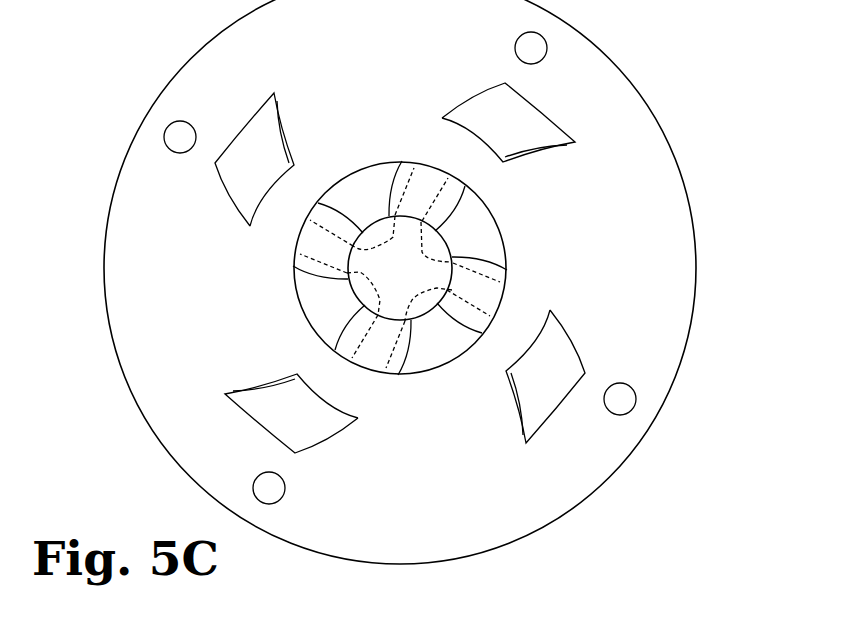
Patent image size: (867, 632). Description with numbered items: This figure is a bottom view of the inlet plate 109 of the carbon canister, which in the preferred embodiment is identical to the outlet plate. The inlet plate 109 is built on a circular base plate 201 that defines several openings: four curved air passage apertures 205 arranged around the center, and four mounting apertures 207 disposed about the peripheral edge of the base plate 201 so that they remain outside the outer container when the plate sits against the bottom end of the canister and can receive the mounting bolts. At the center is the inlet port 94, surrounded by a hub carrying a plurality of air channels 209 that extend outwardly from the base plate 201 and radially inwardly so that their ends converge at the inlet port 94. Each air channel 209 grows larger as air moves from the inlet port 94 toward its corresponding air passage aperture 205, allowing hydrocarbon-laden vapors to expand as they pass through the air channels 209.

The inlet plate 109 is at (128, 117).
The base plate 201 is at (697, 217).
The air passage apertures 205 is at (553, 112).
The mounting apertures 207 is at (638, 397).
The air channels 209 is at (482, 258).
The inlet port 94 is at (422, 302).